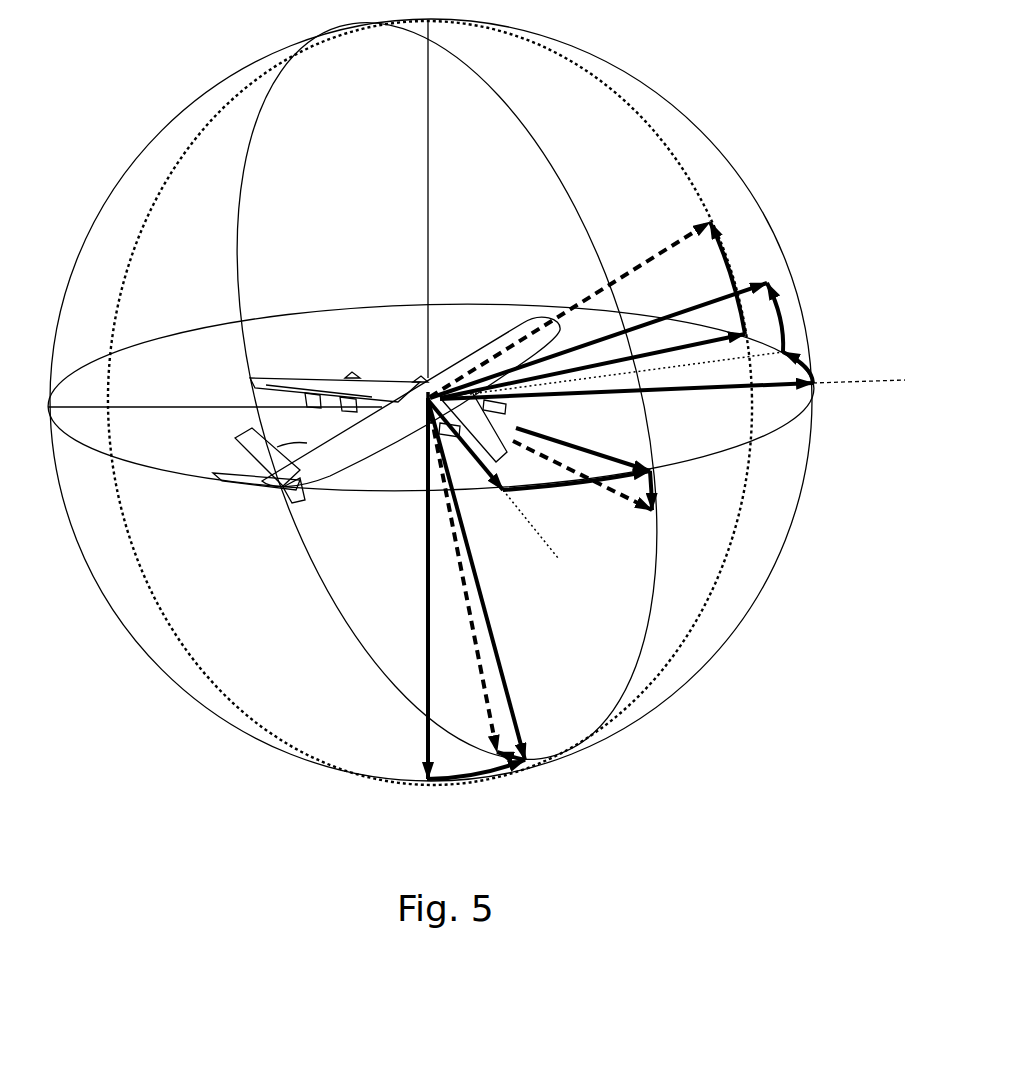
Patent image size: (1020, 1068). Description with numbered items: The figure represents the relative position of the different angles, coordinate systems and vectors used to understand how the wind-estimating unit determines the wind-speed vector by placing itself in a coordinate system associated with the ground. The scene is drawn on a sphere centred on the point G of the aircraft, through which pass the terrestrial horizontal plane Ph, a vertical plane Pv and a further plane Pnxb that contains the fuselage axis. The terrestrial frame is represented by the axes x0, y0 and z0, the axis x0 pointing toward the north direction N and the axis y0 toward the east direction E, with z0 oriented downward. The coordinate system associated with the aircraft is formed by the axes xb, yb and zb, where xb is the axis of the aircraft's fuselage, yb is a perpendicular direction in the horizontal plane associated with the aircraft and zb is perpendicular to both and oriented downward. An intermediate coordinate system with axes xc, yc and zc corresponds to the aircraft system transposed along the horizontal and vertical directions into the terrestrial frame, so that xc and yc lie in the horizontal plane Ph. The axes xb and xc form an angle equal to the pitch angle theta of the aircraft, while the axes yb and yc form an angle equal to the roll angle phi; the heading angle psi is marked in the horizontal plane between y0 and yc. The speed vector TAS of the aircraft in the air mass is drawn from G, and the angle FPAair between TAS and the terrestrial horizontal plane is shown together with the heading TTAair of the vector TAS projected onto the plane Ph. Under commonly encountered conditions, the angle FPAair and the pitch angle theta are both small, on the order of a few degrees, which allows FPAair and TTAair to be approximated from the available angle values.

The plane containing the body longitudinal axis and the normal Pnxb is at (255, 115).
The horizontal plane Ph is at (205, 331).
The vertical plane Pv is at (140, 650).
The aircraft center of gravity G is at (413, 405).
The x axis of the earth reference frame x0 is at (626, 397).
The y axis of the earth reference frame y0 is at (465, 447).
The z axis of the earth reference frame z0 is at (414, 588).
The xc axis of intermediate coordinate system xc is at (592, 362).
The yc axis of intermediate coordinate system yc is at (583, 449).
The zc axis of intermediate coordinate system zc is at (476, 586).
The xb axis of aircraft coordinate system xb is at (570, 309).
The yb axis of aircraft coordinate system yb is at (582, 484).
The zb axis of aircraft coordinate system zb is at (462, 576).
The speed vector of the aircraft in the air mass TAS is at (714, 281).
The flight path angle air FPAair is at (798, 317).
The true track angle air TTAair is at (817, 365).
The north direction N is at (859, 372).
The east direction E is at (537, 525).
The pitch angle theta is at (586, 502).
The roll angle phi is at (582, 615).
The heading angle psi is at (576, 489).